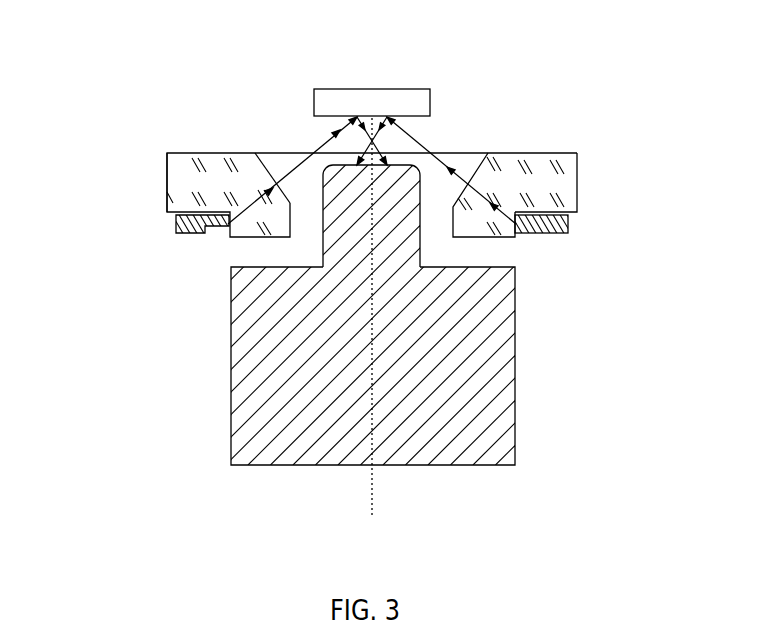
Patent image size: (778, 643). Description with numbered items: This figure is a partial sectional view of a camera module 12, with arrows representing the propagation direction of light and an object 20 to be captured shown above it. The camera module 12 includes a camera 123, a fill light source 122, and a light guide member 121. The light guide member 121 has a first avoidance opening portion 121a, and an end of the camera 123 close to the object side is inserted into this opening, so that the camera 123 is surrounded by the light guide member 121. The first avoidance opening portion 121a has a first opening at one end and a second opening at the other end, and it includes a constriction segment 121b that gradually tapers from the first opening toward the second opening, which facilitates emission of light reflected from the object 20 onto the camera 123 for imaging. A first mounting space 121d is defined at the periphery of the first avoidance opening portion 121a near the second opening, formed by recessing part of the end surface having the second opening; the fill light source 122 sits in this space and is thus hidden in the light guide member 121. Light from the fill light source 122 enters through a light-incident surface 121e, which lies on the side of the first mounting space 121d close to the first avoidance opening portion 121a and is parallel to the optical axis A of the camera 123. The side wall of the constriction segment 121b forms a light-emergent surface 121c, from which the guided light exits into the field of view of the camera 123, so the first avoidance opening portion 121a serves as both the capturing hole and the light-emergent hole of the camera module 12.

The camera module 12 is at (110, 49).
The object to be captured 20 is at (401, 102).
The light guide member 121 is at (540, 183).
The first avoidance opening portion 121a is at (484, 276).
The constriction segment 121b is at (482, 143).
The light-emergent surface 121c is at (289, 176).
The first mounting space 121d is at (146, 223).
The light-incident surface 121e is at (548, 237).
The fill light source 122 is at (570, 219).
The camera 123 is at (452, 427).
The optical axis A is at (372, 493).